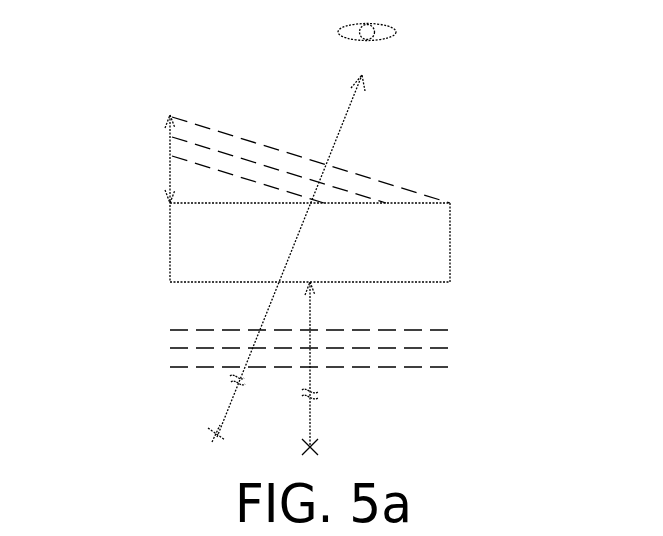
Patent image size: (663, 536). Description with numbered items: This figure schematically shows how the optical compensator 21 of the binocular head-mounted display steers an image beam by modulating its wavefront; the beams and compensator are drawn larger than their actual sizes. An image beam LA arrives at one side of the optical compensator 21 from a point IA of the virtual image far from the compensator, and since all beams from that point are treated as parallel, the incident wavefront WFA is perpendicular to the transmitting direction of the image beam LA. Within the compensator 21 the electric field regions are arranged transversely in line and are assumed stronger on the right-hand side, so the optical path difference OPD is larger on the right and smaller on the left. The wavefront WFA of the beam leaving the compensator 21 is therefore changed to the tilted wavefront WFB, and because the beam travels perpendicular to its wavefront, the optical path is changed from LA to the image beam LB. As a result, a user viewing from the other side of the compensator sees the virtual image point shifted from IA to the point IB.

The optical compensator 21 is at (450, 242).
The optical path difference OPD is at (109, 159).
The wavefront WF_B WFB is at (220, 131).
The wavefront WF_A WFA is at (440, 367).
The image beam L_B LB is at (352, 112).
The image beam L_A LA is at (312, 310).
The point I_B IB is at (198, 436).
The point I_A IA is at (330, 454).